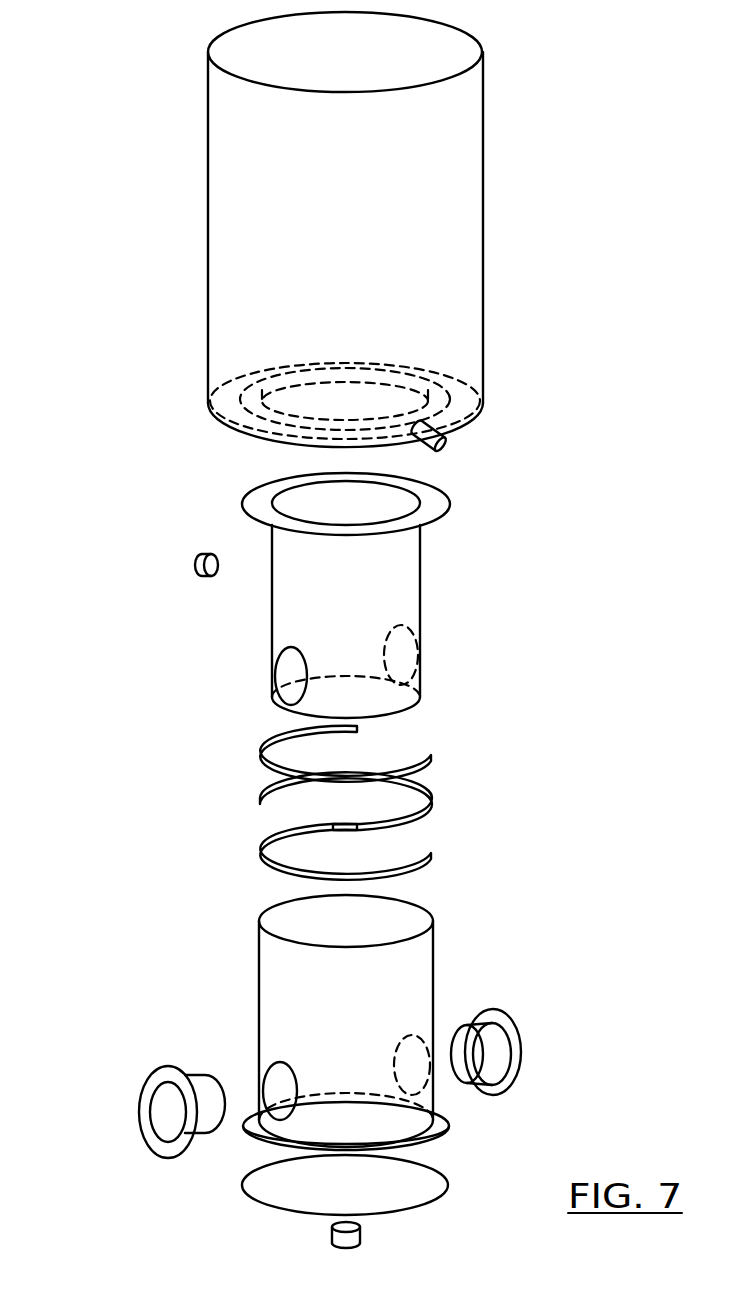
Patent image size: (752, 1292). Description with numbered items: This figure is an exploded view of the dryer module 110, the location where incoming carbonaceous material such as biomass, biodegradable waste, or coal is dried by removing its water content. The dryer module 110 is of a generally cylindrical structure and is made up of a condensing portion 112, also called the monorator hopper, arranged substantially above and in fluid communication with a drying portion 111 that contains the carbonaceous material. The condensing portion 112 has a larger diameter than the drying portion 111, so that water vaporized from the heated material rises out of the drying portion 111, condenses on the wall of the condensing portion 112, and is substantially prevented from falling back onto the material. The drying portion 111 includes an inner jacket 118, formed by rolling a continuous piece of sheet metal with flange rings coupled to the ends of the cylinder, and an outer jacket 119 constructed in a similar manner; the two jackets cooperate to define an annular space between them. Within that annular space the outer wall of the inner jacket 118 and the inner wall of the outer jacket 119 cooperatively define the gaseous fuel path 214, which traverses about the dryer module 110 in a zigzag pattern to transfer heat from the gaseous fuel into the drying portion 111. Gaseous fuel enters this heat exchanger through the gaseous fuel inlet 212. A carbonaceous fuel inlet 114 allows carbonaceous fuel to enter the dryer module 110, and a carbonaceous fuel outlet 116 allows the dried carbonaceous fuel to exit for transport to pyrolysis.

The dryer module 110 is at (116, 147).
The condensing portion 112 is at (515, 15).
The drying portion 111 is at (515, 477).
The inner jacket 118 is at (272, 627).
The gaseous fuel path 214 is at (260, 753).
The outer jacket 119 is at (259, 972).
The carbonaceous fuel inlet 114 is at (490, 1007).
The carbonaceous fuel outlet 116 is at (138, 1105).
The gaseous fuel inlet 212 is at (332, 1238).